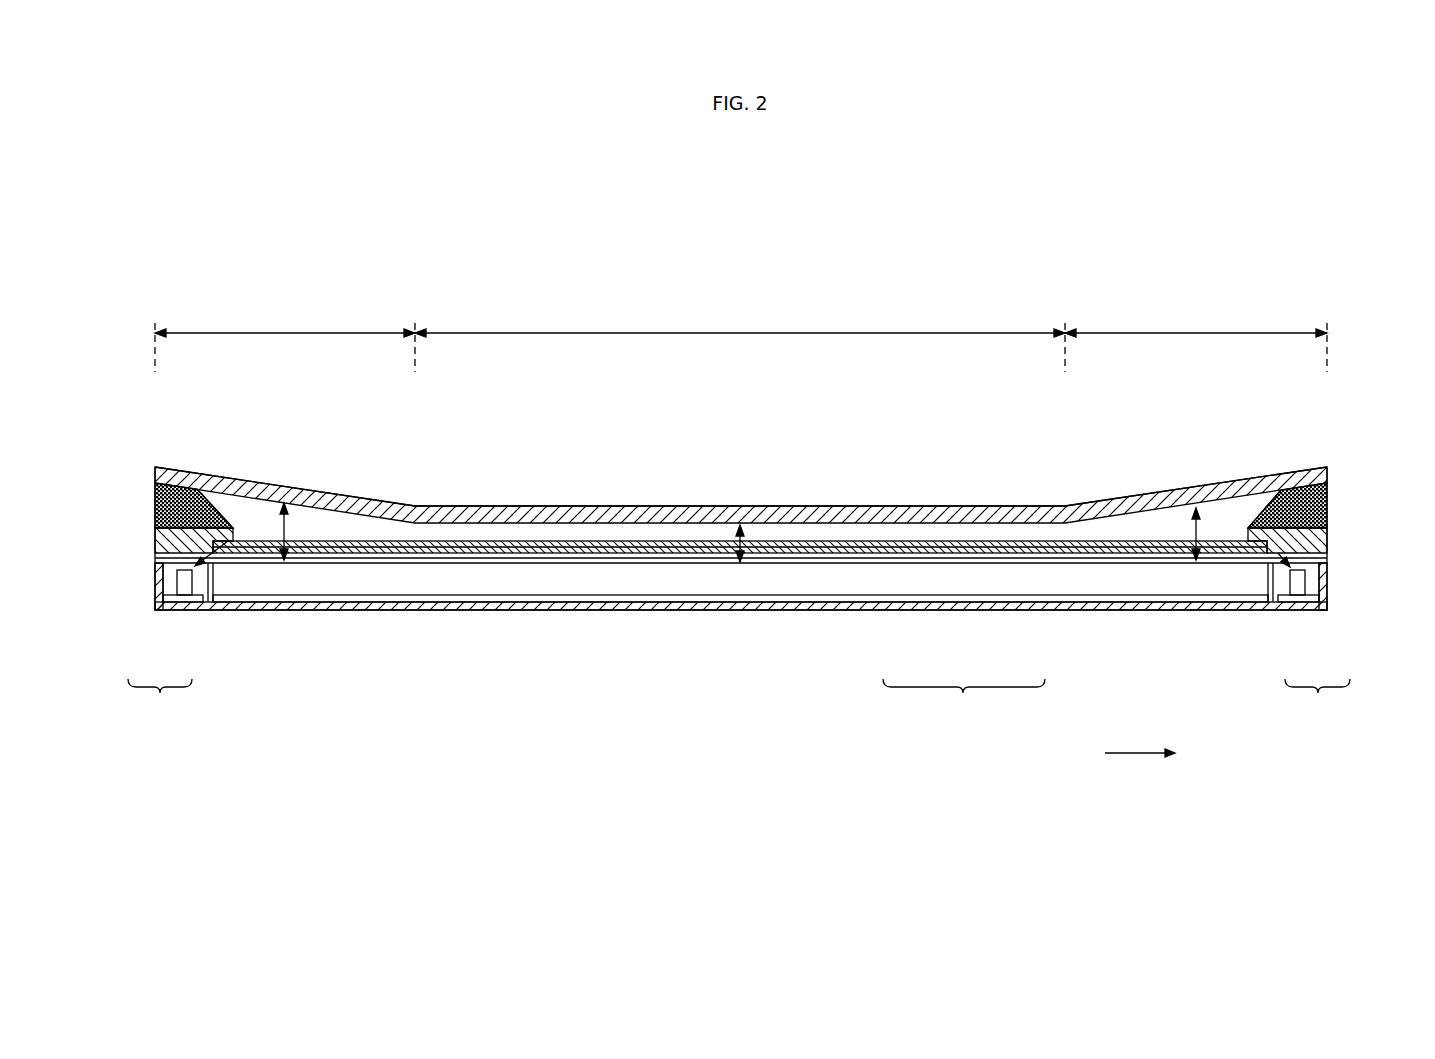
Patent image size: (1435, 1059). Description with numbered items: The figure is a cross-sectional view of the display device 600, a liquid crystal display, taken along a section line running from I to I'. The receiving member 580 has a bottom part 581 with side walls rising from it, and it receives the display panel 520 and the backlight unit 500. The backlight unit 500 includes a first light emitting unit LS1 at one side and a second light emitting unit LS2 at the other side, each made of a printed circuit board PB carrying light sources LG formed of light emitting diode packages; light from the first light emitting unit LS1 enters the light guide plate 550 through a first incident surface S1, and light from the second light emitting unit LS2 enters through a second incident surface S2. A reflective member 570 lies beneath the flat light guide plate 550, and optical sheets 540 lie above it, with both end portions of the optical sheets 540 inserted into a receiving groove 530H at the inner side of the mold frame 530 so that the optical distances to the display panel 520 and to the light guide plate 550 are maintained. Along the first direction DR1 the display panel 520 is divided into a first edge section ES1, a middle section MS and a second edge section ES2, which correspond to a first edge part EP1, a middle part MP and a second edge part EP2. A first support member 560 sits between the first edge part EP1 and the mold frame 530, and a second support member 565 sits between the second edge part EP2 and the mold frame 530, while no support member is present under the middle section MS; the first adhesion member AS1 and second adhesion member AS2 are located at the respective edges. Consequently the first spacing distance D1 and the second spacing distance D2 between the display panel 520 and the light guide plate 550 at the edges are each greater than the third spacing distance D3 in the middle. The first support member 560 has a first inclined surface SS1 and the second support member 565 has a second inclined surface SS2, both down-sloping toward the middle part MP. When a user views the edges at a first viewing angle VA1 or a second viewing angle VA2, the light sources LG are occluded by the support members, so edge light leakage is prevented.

The display device 600 is at (1289, 245).
The display panel 520 is at (1334, 471).
The first support member 560 is at (163, 504).
The second support member 565 is at (1315, 507).
The mold frame 530 is at (167, 540).
The receiving groove 530H is at (240, 548).
The optical sheets 540 is at (898, 548).
The light guide plate 550 is at (962, 580).
The reflective member 570 is at (1025, 598).
The receiving member 580 is at (1320, 580).
The bottom part 581 is at (1168, 605).
The backlight unit 500 is at (964, 698).
The light source LG is at (188, 581).
The printed circuit board PB is at (183, 601).
The first incident surface S1 is at (209, 584).
The second incident surface S2 is at (1270, 594).
The first light emitting unit LS1 is at (160, 698).
The second light emitting unit LS2 is at (1317, 698).
The first edge section ES1 is at (285, 338).
The second edge section ES2 is at (1196, 338).
The middle section MS is at (740, 338).
The first viewing angle VA1 is at (228, 514).
The second viewing angle VA2 is at (1251, 514).
The first inclined surface SS1 is at (220, 484).
The second inclined surface SS2 is at (1270, 498).
The first edge part EP1 is at (313, 491).
The second edge part EP2 is at (1165, 491).
The middle part MP is at (632, 507).
The first adhesion member AS1 is at (155, 483).
The second adhesion member AS2 is at (1328, 484).
The first spacing distance D1 is at (298, 531).
The second spacing distance D2 is at (1211, 534).
The third spacing distance D3 is at (738, 538).
The section line start I is at (153, 445).
The section line end I' is at (1330, 445).
The first direction DR1 is at (1161, 753).